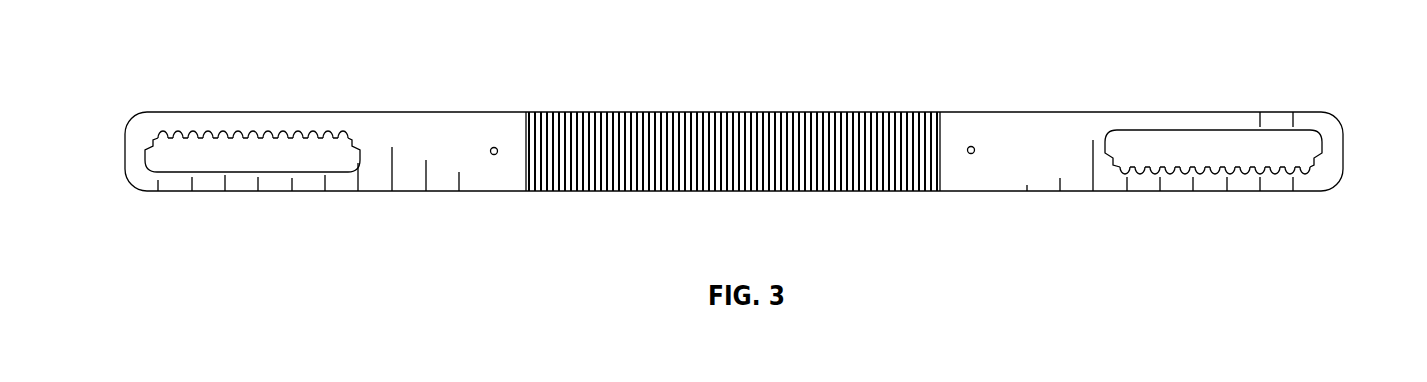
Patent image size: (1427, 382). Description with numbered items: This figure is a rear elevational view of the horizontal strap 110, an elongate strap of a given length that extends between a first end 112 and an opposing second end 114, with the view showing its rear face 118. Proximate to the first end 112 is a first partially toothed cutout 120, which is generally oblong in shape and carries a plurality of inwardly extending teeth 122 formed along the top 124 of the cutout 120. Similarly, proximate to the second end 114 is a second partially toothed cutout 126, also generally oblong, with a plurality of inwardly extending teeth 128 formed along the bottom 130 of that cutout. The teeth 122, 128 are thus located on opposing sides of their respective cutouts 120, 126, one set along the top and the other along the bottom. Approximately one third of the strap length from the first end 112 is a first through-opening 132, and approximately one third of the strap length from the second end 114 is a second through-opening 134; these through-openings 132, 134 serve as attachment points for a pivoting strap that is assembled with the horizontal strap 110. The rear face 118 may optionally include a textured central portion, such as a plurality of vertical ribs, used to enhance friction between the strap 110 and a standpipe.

The horizontal strap 110 is at (1003, 110).
The first end 112 is at (125, 155).
The second end 114 is at (1343, 150).
The rear face 118 is at (487, 182).
The first partially toothed cutout 120 is at (273, 167).
The teeth 122 is at (190, 136).
The top of cutout 124 is at (223, 130).
The second partially toothed cutout 126 is at (1105, 148).
The teeth 128 is at (1220, 163).
The bottom of cutout 130 is at (1177, 173).
The first through-opening 132 is at (492, 147).
The second through-opening 134 is at (970, 146).